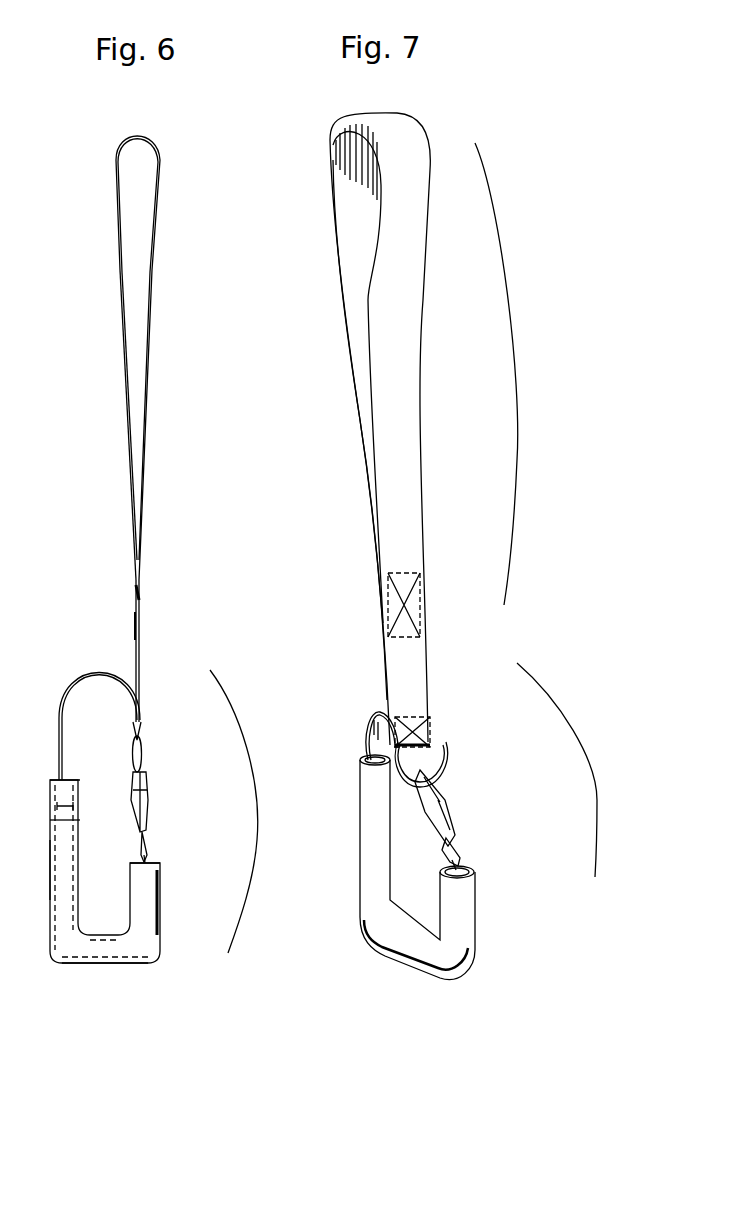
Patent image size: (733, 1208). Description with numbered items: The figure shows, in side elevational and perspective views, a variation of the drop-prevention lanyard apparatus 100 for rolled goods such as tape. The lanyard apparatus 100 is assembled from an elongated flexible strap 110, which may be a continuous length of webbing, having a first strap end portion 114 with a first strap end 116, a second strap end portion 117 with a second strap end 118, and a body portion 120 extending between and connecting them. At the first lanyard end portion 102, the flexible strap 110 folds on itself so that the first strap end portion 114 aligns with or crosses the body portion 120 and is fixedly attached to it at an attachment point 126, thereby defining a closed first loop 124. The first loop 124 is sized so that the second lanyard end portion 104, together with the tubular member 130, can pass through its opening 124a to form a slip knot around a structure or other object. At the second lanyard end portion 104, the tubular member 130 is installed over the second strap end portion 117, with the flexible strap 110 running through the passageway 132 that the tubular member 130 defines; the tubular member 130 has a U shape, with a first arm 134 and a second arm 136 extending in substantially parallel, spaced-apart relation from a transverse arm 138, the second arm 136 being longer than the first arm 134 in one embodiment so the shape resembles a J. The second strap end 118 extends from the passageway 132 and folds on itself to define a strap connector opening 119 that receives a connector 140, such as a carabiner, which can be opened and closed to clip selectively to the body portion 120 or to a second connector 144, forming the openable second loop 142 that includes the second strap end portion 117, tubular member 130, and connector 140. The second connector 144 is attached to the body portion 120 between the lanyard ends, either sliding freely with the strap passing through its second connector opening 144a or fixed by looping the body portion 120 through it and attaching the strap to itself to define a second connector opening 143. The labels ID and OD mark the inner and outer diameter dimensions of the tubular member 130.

In FIG. 6, the drop-prevention lanyard apparatus 100 is at (80, 156).
In FIG. 7, the drop-prevention lanyard apparatus 100 is at (290, 104).
In FIG. 7, the first lanyard end portion 102 is at (450, 150).
In FIG. 6, the second lanyard end portion 104 is at (212, 953).
In FIG. 7, the second lanyard end portion 104 is at (314, 942).
In FIG. 6, the flexible strap 110 is at (140, 667).
In FIG. 7, the flexible strap 110 is at (370, 506).
In FIG. 6, the first strap end portion 114 is at (128, 496).
In FIG. 7, the first strap end portion 114 is at (374, 539).
In FIG. 6, the first strap end 116 is at (135, 623).
In FIG. 7, the first strap end 116 is at (382, 630).
In FIG. 6, the second strap end portion 117 is at (61, 712).
In FIG. 7, the second strap end portion 117 is at (408, 658).
In FIG. 6, the second strap end 118 is at (147, 838).
In FIG. 7, the second strap end 118 is at (420, 743).
In FIG. 6, the strap connector opening 119 is at (136, 842).
In FIG. 7, the strap connector opening 119 is at (448, 856).
In FIG. 6, the body portion 120 is at (150, 353).
In FIG. 7, the body portion 120 is at (392, 386).
In FIG. 7, the first loop 124 is at (338, 243).
In FIG. 6, the opening 124a is at (138, 229).
In FIG. 7, the opening 124a is at (378, 182).
In FIG. 6, the attachment point 126 is at (141, 603).
In FIG. 7, the attachment point 126 is at (420, 605).
In FIG. 6, the tubular member 130 is at (48, 890).
In FIG. 7, the tubular member 130 is at (360, 781).
In FIG. 6, the passageway 132 is at (58, 779).
In FIG. 7, the passageway 132 is at (361, 757).
In FIG. 6, the first arm 134 is at (148, 912).
In FIG. 7, the first arm 134 is at (455, 904).
In FIG. 6, the second arm 136 is at (58, 866).
In FIG. 7, the second arm 136 is at (379, 835).
In FIG. 6, the transverse arm 138 is at (96, 971).
In FIG. 7, the transverse arm 138 is at (402, 934).
In FIG. 6, the connector 140 is at (150, 803).
In FIG. 7, the connector 140 is at (448, 784).
In FIG. 6, the openable second loop 142 is at (256, 818).
In FIG. 7, the openable second loop 142 is at (597, 750).
In FIG. 6, the second connector opening 143 is at (143, 742).
In FIG. 6, the second connector 144 is at (141, 753).
In FIG. 7, the second connector 144 is at (441, 753).
In FIG. 7, the second connector opening 144a is at (430, 761).
In FIG. 6, the inner diameter ID is at (60, 806).
In FIG. 6, the outer diameter OD is at (56, 821).